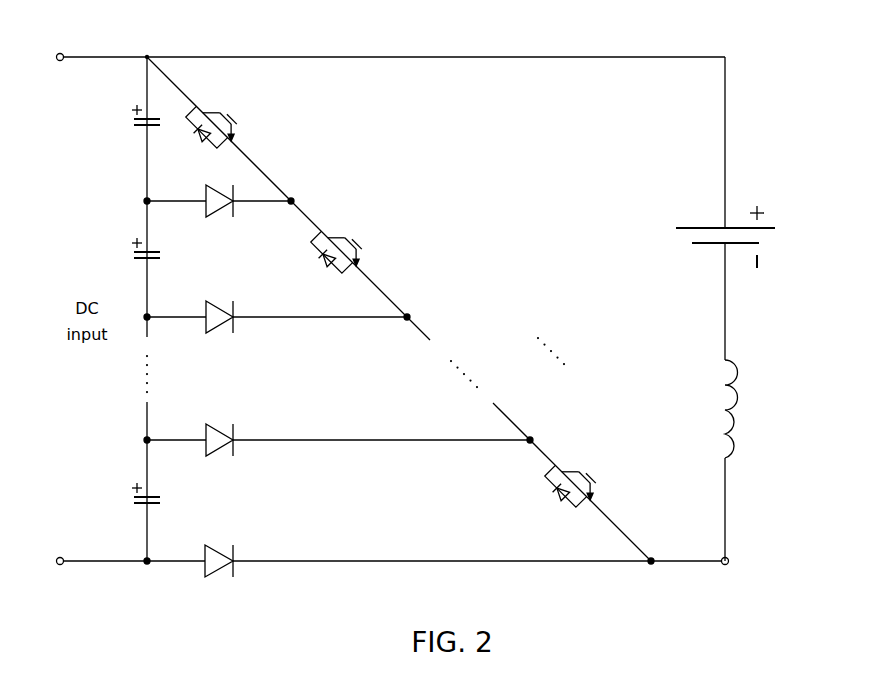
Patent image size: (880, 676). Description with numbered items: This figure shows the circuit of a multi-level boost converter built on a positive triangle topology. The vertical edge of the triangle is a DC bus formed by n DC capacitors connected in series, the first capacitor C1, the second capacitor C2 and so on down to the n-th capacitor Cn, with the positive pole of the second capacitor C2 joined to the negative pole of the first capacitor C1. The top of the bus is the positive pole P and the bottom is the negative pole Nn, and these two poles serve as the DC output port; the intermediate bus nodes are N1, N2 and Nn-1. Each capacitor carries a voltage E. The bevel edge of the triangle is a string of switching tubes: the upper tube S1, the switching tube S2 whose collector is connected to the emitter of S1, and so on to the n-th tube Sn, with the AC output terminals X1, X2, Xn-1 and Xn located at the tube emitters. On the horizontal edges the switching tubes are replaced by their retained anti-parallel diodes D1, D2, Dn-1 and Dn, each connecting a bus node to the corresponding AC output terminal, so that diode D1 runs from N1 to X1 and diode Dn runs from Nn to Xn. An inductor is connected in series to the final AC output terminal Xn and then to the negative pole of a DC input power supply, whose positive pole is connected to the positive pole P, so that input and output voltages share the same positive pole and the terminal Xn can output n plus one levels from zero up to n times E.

The positive pole of the DC bus P is at (138, 47).
The first capacitor C1 is at (135, 122).
The second capacitor C2 is at (135, 254).
The n-th capacitor Cn is at (135, 498).
The node between first and second capacitors N1 is at (159, 203).
The node at negative pole of second capacitor N2 is at (159, 319).
The node at negative pole of (n-1)-th capacitor Nn-1 is at (153, 442).
The negative pole of the DC bus Nn is at (134, 575).
The anti-parallel diode of first horizontal-edge switching tube D1 is at (248, 210).
The anti-parallel diode of second horizontal-edge switching tube D2 is at (306, 326).
The anti-parallel diode of (n-1)-th horizontal-edge switching tube Dn-1 is at (368, 448).
The anti-parallel diode of n-th horizontal-edge switching tube Dn is at (237, 556).
The first AC output terminal X1 is at (303, 203).
The second AC output terminal X2 is at (418, 319).
The (n-1)-th AC output terminal Xn-1 is at (548, 442).
The n-th AC output terminal Xn is at (662, 552).
The upper switching tube S1 is at (265, 127).
The second switching tube S2 is at (392, 254).
The n-th switching tube Sn is at (617, 491).
The capacitor voltage E is at (757, 253).